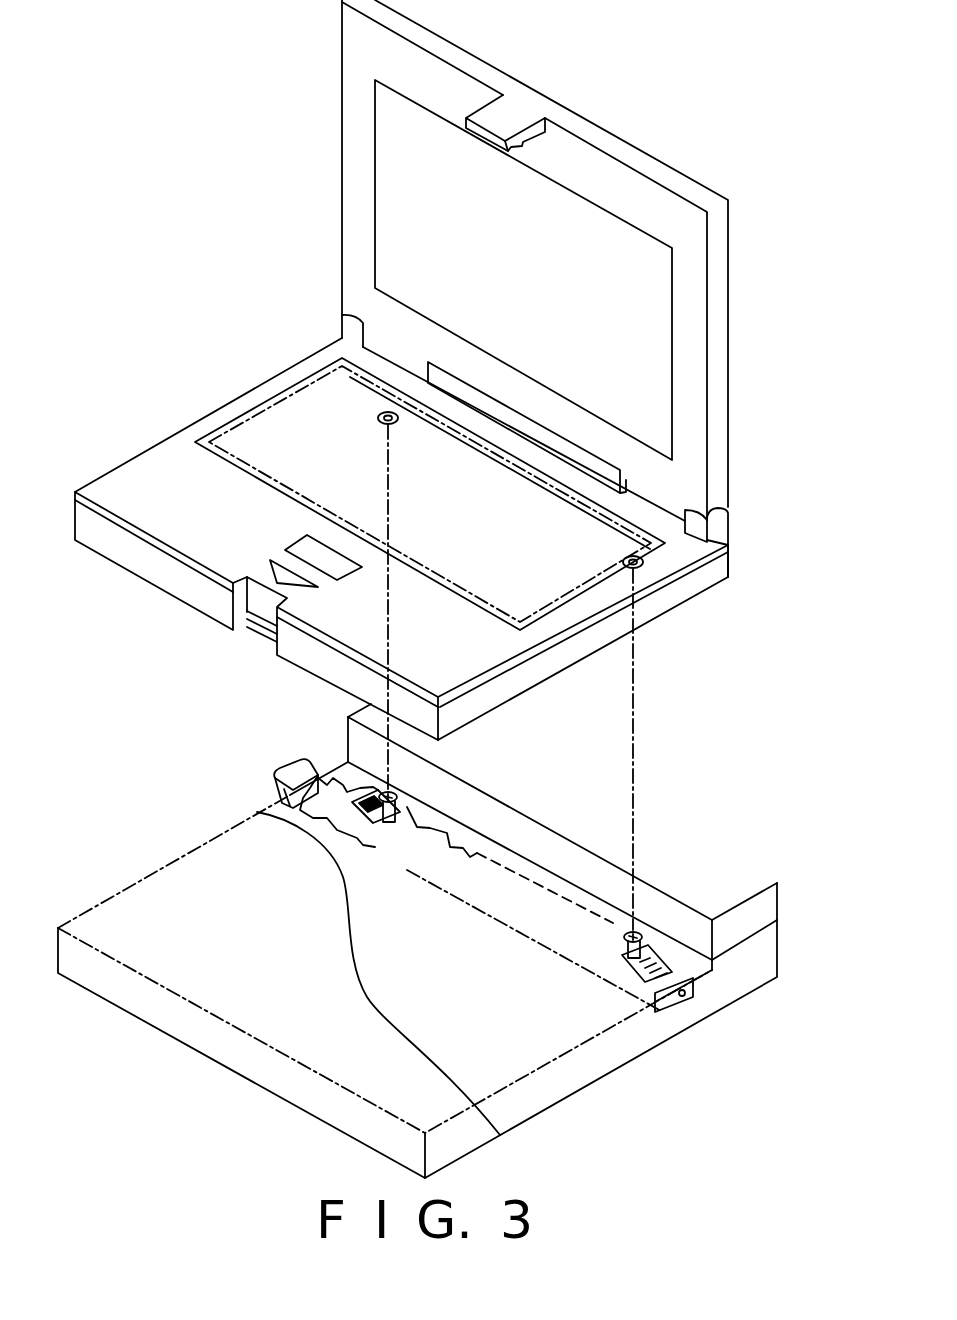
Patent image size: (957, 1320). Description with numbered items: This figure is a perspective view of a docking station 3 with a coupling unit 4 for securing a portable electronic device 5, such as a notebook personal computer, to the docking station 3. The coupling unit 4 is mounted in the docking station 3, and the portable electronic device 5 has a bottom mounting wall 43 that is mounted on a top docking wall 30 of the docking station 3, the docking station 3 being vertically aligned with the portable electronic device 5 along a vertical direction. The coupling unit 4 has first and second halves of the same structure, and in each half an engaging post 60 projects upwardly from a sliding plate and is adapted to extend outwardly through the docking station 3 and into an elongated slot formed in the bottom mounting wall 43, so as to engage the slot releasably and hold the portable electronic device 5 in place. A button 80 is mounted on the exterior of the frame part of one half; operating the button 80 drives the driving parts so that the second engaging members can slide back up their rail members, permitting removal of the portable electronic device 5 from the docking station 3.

The docking station 3 is at (417, 936).
The coupling unit 4 is at (450, 913).
The portable electronic device 5 is at (718, 490).
The top docking wall 30 is at (170, 895).
The bottom mounting wall 43 is at (643, 627).
The engaging post 60 is at (397, 807).
The button 80 is at (273, 781).